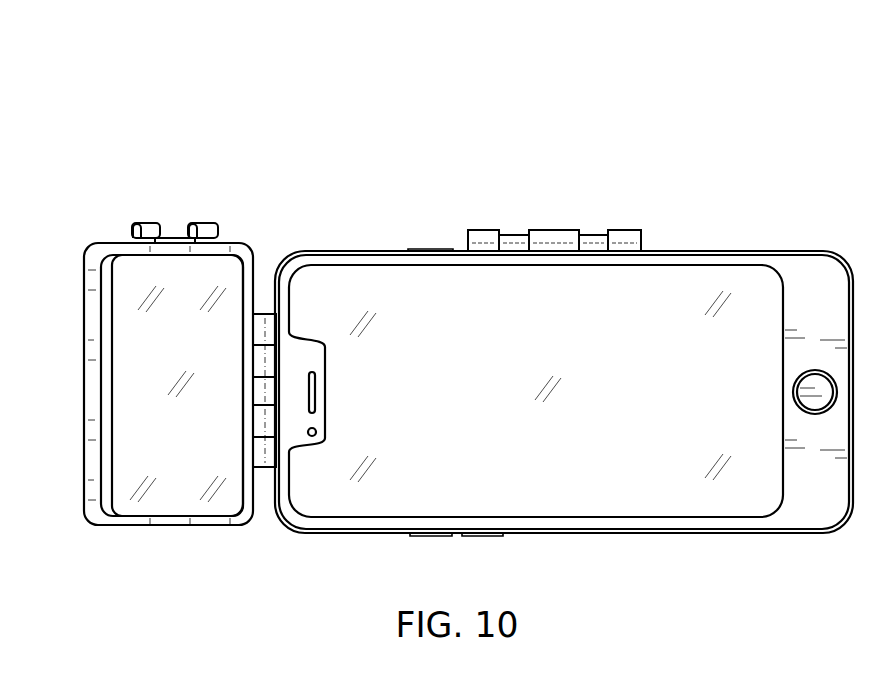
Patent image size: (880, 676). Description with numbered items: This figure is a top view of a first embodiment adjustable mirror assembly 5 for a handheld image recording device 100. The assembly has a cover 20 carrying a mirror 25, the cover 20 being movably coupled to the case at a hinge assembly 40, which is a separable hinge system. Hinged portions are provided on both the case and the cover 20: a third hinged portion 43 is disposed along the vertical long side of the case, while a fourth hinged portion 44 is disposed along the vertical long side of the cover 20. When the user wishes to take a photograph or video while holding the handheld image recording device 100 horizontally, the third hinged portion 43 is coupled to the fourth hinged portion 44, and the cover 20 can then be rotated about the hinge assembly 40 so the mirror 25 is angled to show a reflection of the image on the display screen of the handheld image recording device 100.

The adjustable mirror assembly 5 is at (216, 62).
The cover 20 is at (92, 388).
The mirror 25 is at (165, 478).
The hinge assembly 40 is at (261, 304).
The third hinged portion 43 is at (553, 232).
The fourth hinged portion 44 is at (166, 232).
The handheld image recording device 100 is at (700, 282).